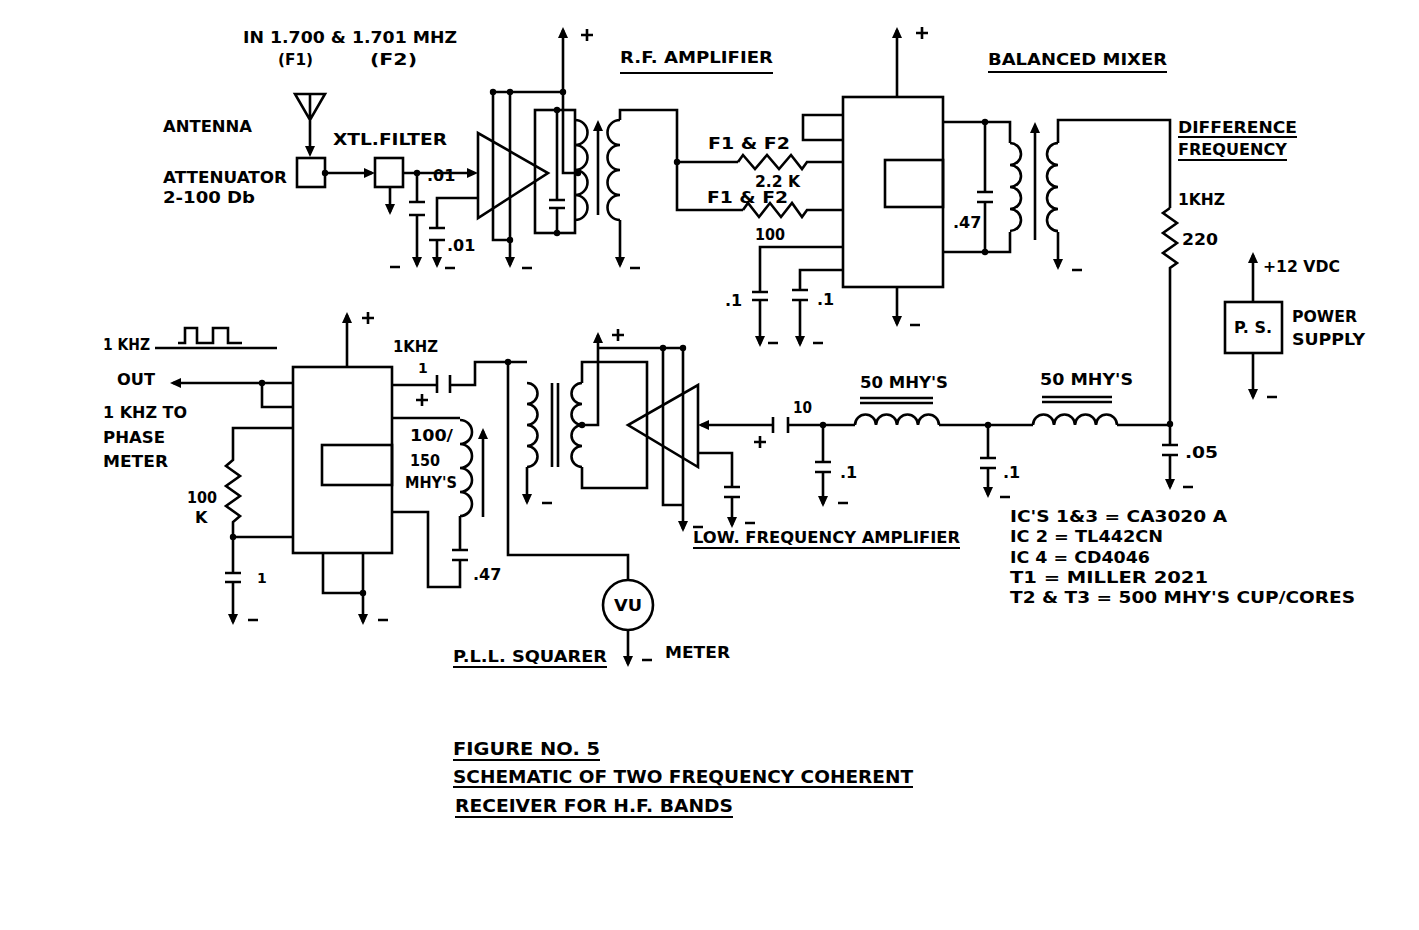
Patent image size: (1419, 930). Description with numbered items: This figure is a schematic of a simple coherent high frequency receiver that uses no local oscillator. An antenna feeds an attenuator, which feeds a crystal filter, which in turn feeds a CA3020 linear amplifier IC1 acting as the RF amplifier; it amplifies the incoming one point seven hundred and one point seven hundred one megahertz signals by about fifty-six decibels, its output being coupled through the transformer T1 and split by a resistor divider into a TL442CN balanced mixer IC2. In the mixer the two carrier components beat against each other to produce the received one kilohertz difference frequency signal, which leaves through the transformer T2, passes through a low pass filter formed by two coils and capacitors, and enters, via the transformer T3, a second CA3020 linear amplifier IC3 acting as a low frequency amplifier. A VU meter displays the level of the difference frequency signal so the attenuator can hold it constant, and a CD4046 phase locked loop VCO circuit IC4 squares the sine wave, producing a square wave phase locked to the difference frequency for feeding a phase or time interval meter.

The CA3020 H.F. amplifier IC1 is at (499, 212).
The TL442CN balanced mixer IC2 is at (893, 190).
The low frequency amplifier IC3 is at (688, 426).
The Phase Locked Loop VCO circuit IC4 is at (342, 460).
The RF amplifier output transformer T1 is at (597, 160).
The mixer output transformer T2 is at (1034, 166).
The low frequency amplifier input transformer T3 is at (554, 413).